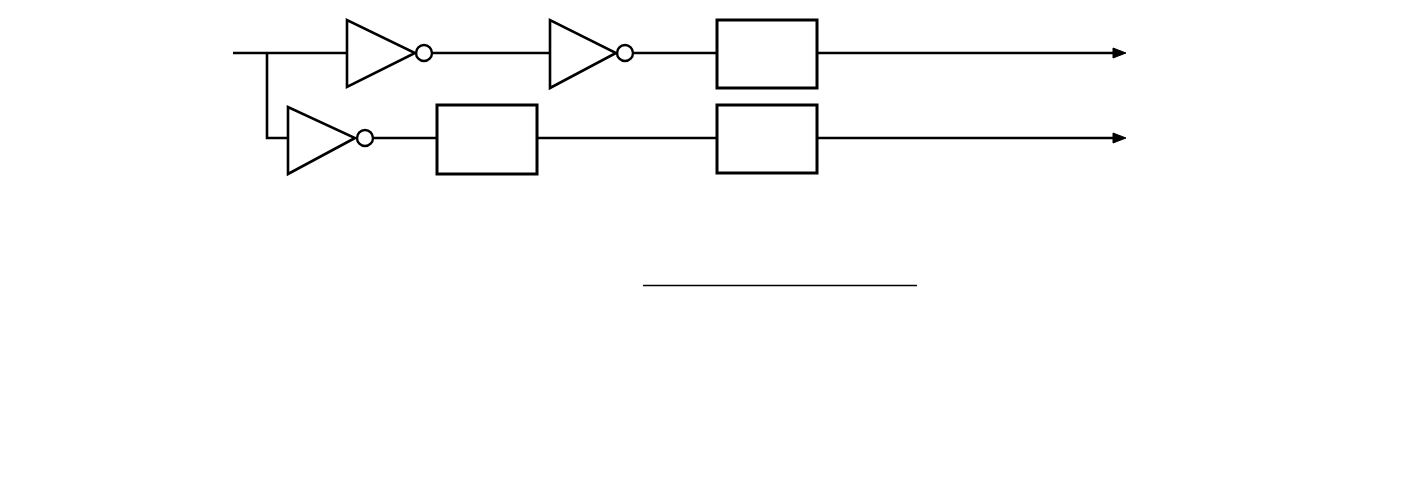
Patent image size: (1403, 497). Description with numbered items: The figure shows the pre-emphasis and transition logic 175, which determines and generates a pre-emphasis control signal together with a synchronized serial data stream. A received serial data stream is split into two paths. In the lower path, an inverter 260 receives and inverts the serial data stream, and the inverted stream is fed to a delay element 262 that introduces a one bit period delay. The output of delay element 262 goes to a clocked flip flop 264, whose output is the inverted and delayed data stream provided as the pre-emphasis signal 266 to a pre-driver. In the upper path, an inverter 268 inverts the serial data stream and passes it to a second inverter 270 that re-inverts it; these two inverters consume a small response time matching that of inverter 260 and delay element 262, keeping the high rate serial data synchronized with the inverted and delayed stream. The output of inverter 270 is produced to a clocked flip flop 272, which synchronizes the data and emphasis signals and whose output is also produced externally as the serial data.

The pre-emphasis and transition logic 175 is at (752, 166).
The inverter 260 is at (320, 158).
The delay element 262 is at (473, 175).
The clocked flip flop 264 is at (767, 139).
The pre-emphasis signal 266 is at (1093, 140).
The inverter 268 is at (380, 72).
The second inverter 270 is at (582, 73).
The clocked flip flop 272 is at (767, 54).